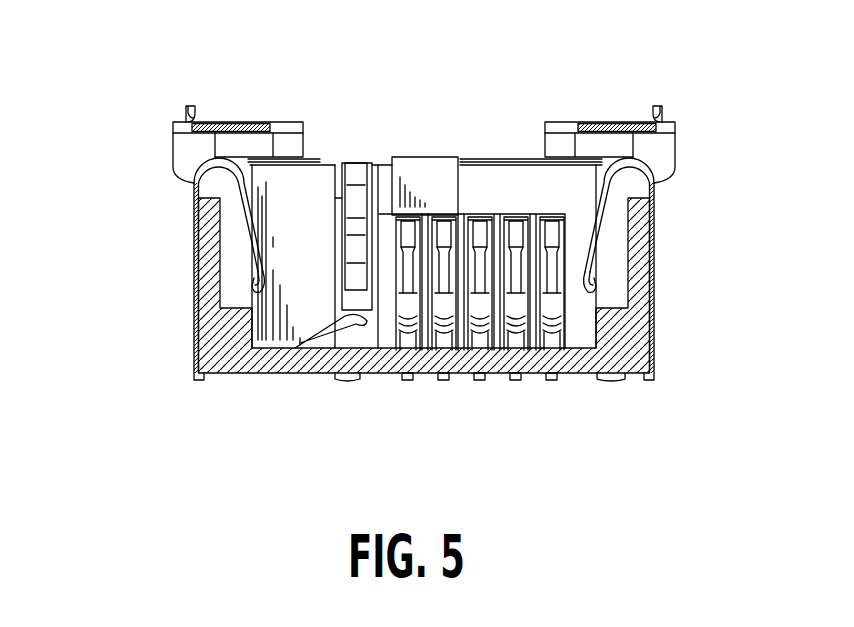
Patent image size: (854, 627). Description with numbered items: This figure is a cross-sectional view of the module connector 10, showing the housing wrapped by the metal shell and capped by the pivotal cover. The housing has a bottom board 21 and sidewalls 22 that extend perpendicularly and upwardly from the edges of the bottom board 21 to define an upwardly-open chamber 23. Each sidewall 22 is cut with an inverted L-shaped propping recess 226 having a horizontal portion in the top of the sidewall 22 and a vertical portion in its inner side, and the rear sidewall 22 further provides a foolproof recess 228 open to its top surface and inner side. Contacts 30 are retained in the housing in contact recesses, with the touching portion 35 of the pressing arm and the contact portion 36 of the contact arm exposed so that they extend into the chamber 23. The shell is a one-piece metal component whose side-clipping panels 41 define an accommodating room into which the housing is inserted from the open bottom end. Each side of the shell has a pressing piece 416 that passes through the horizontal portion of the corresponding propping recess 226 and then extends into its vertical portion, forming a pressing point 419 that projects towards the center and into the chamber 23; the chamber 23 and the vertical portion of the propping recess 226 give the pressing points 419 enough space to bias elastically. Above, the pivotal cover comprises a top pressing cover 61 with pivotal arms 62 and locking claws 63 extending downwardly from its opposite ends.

The module connector 10 is at (155, 75).
The bottom board 21 is at (428, 357).
The sidewall 22 is at (215, 260).
The propping recess 226 is at (217, 192).
The foolproof recess 228 is at (427, 195).
The chamber 23 is at (262, 330).
The contact 30 is at (548, 293).
The touching portion 35 is at (308, 270).
The contact portion 36 is at (352, 320).
The side-clipping panel 41 is at (192, 325).
The pressing piece 416 is at (237, 210).
The pressing point 419 is at (255, 275).
The top pressing cover 61 is at (233, 125).
The pivotal arm 62 is at (187, 155).
The locking claw 63 is at (288, 145).